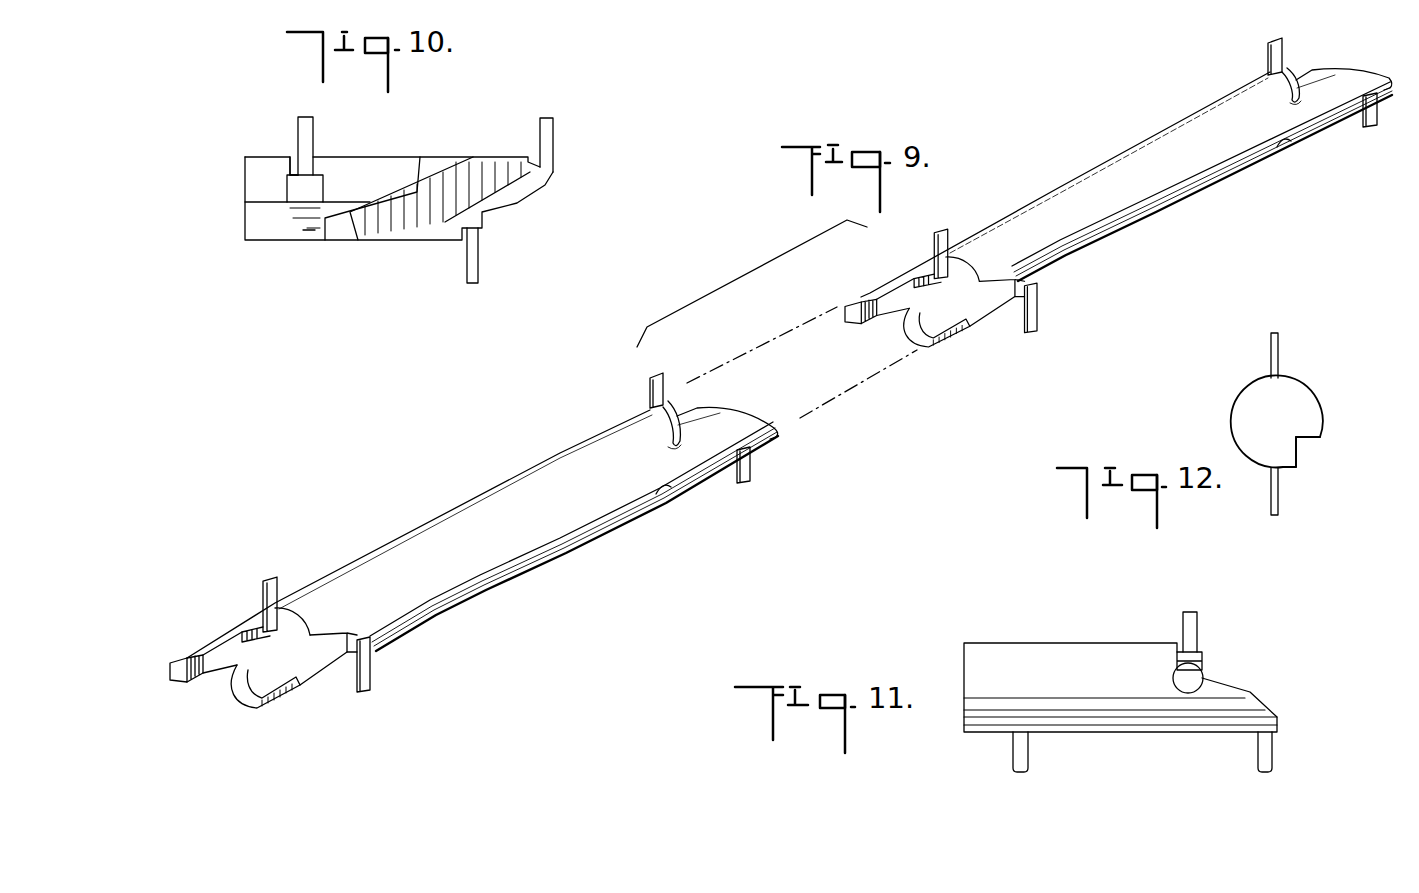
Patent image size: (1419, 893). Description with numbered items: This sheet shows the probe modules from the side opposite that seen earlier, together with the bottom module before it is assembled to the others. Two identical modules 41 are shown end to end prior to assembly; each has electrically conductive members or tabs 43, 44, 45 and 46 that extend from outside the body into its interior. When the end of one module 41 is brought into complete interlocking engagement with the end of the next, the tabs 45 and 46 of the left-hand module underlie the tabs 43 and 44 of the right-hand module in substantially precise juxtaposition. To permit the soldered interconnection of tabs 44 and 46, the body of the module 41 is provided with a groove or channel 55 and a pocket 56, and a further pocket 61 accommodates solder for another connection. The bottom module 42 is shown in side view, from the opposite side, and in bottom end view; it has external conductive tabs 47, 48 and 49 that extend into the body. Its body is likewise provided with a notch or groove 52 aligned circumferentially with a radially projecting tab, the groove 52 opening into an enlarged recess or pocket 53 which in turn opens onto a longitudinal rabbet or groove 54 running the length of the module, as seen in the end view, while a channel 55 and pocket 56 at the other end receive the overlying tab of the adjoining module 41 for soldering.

In FIG. 9, the module 41 is at (472, 513).
In FIG. 10, the bottom module 42 is at (380, 243).
In FIG. 11, the bottom module 42 is at (1065, 648).
In FIG. 12, the bottom module 42 is at (1232, 402).
In FIG. 9, the conductive tab 43 is at (367, 687).
In FIG. 9, the conductive tab 44 is at (275, 582).
In FIG. 9, the conductive tab 45 is at (750, 482).
In FIG. 9, the conductive tab 46 is at (647, 383).
In FIG. 10, the conductive tab 47 is at (310, 125).
In FIG. 11, the conductive tab 47 is at (1028, 767).
In FIG. 12, the conductive tab 47 is at (1280, 353).
In FIG. 10, the conductive tab 48 is at (480, 277).
In FIG. 11, the conductive tab 48 is at (1197, 623).
In FIG. 12, the conductive tab 48 is at (1280, 510).
In FIG. 10, the conductive tab 49 is at (547, 138).
In FIG. 11, the conductive tab 49 is at (1272, 773).
In FIG. 10, the notch or groove 52 is at (300, 166).
In FIG. 10, the recess or pocket 53 is at (285, 185).
In FIG. 10, the longitudinal rabbet or groove 54 is at (312, 231).
In FIG. 12, the longitudinal rabbet or groove 54 is at (1298, 457).
In FIG. 9, the groove or channel 55 is at (662, 410).
In FIG. 11, the groove or channel 55 is at (1202, 658).
In FIG. 9, the pocket 56 is at (683, 442).
In FIG. 11, the pocket 56 is at (1195, 682).
In FIG. 9, the pocket 61 is at (651, 500).